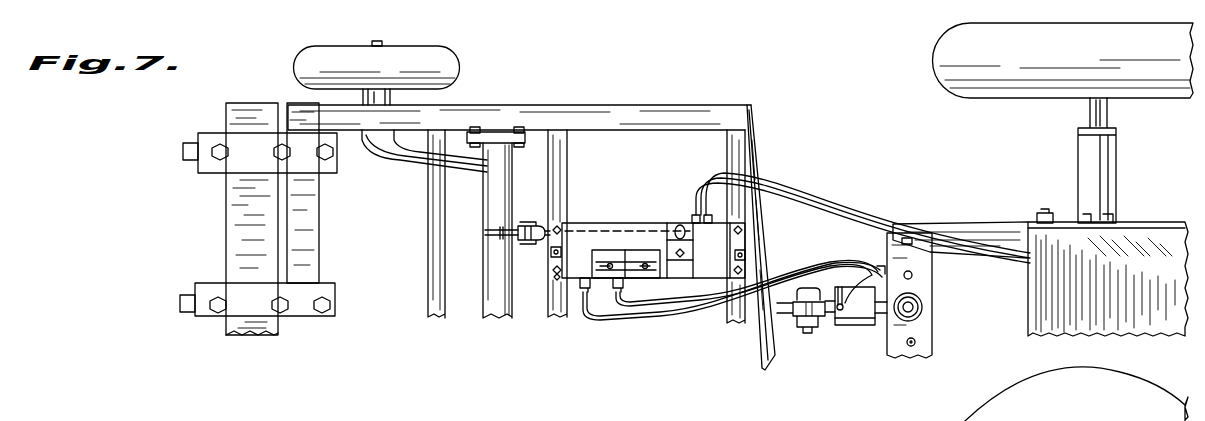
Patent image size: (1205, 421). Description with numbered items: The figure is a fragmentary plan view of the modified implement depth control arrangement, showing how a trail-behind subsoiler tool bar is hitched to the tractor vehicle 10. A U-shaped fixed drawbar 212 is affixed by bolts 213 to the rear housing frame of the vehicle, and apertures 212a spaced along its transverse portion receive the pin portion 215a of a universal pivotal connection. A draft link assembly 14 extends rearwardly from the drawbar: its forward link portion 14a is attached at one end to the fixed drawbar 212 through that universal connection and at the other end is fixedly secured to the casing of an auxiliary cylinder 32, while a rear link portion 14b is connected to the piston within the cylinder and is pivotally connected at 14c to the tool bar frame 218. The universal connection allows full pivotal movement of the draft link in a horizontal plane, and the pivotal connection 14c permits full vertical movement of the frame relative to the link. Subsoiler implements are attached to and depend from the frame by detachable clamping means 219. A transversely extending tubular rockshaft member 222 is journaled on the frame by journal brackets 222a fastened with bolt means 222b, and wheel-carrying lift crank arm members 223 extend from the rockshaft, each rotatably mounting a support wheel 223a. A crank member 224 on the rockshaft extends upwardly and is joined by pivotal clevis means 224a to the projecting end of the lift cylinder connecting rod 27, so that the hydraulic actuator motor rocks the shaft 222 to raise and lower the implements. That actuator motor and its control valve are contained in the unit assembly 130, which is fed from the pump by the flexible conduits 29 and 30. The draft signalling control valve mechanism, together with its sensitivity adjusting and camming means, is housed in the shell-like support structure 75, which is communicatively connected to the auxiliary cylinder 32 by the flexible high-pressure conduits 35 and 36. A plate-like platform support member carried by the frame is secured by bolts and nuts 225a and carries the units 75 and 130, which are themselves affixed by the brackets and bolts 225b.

The tractor vehicle 10 is at (1133, 412).
The draft link assembly 14 is at (813, 334).
The forward link portion 14a is at (883, 308).
The rear link portion 14b is at (827, 312).
The pivotal connection 14c is at (803, 318).
The connecting rod 27 is at (550, 222).
The conduit 29 is at (788, 218).
The conduit 30 is at (807, 194).
The auxiliary cylinder 32 is at (852, 287).
The flexible high-pressure conduit 35 is at (680, 313).
The flexible high-pressure conduit 36 is at (675, 296).
The shell-like housing or support structure 75 is at (620, 187).
The unit assembly 130 is at (687, 217).
The fixed drawbar 212 is at (973, 212).
The apertures 212a is at (915, 341).
The bolts 213 is at (1053, 180).
The pin portion 215a is at (923, 298).
The tool bar frame 218 is at (590, 101).
The detachable connecting or clamping means 219 is at (328, 163).
The tubular rockshaft member 222 is at (503, 177).
The journal brackets 222a is at (500, 137).
The bolt means 222b is at (530, 140).
The wheel-carrying lift crank arm members 223 is at (413, 152).
The support wheel 223a is at (450, 58).
The crank member 224 is at (500, 237).
The pivotal clevis means 224a is at (552, 252).
The bolts and nuts 225a is at (555, 276).
The brackets and bolts 225b is at (557, 268).